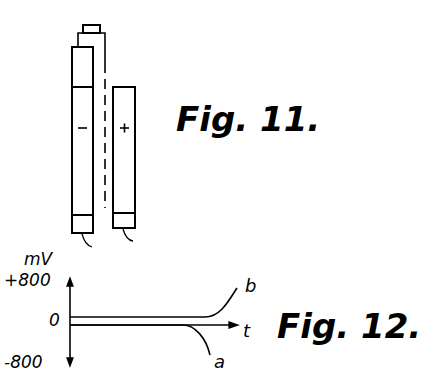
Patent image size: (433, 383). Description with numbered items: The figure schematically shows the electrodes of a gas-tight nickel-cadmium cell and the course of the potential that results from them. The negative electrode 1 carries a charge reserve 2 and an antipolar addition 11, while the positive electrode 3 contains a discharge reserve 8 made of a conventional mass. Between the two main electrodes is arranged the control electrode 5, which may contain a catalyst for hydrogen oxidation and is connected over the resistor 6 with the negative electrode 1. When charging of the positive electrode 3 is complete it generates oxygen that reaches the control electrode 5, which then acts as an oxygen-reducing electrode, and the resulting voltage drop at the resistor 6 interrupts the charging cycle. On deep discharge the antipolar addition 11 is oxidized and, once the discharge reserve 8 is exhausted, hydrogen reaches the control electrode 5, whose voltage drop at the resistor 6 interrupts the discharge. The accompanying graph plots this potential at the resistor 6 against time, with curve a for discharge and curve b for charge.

The negative electrode 1 is at (72, 157).
The charge reserve 2 is at (72, 69).
The positive electrode 3 is at (135, 158).
The control electrode 5 is at (102, 150).
The resistor 6 is at (91, 25).
The discharge reserve 8 is at (135, 246).
The antipolar addition 11 is at (100, 251).